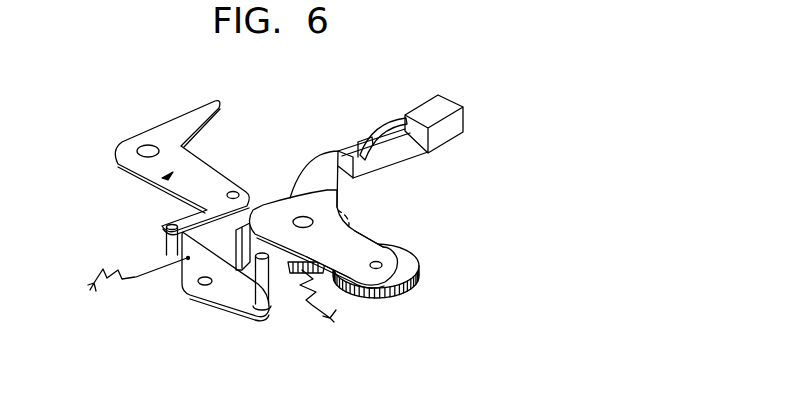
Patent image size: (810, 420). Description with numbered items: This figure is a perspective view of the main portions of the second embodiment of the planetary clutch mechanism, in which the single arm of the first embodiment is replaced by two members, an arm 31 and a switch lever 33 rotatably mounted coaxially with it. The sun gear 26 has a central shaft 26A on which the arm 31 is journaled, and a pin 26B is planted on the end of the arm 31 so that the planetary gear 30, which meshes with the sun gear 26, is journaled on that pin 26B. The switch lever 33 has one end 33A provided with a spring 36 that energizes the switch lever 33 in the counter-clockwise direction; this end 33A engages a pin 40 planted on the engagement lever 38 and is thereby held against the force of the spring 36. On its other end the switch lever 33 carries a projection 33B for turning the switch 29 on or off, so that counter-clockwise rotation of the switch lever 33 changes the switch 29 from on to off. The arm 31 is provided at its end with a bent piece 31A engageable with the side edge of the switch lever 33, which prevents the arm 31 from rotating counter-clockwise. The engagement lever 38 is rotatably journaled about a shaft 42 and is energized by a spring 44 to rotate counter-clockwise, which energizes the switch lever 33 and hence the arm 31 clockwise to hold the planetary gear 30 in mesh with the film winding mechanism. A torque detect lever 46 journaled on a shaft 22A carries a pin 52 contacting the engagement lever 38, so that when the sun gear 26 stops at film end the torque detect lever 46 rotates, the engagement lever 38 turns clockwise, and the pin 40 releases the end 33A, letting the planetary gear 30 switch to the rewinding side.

The shaft 22A is at (118, 153).
The torque detect lever 46 is at (160, 178).
The pin 52 is at (166, 246).
The engagement lever 38 is at (228, 319).
The shaft 42 is at (202, 285).
The spring 44 is at (134, 279).
The pin 40 is at (256, 305).
The bent piece 31A is at (248, 220).
The one end of switch lever 33A is at (241, 262).
The planetary gear 30 is at (410, 262).
The arm 31 is at (372, 238).
The pin 26B is at (381, 267).
The sun gear 26 is at (343, 221).
The central shaft 26A is at (303, 216).
The switch lever 33 is at (284, 196).
The projection 33B is at (346, 158).
The switch 29 is at (445, 108).
The spring 36 is at (304, 304).